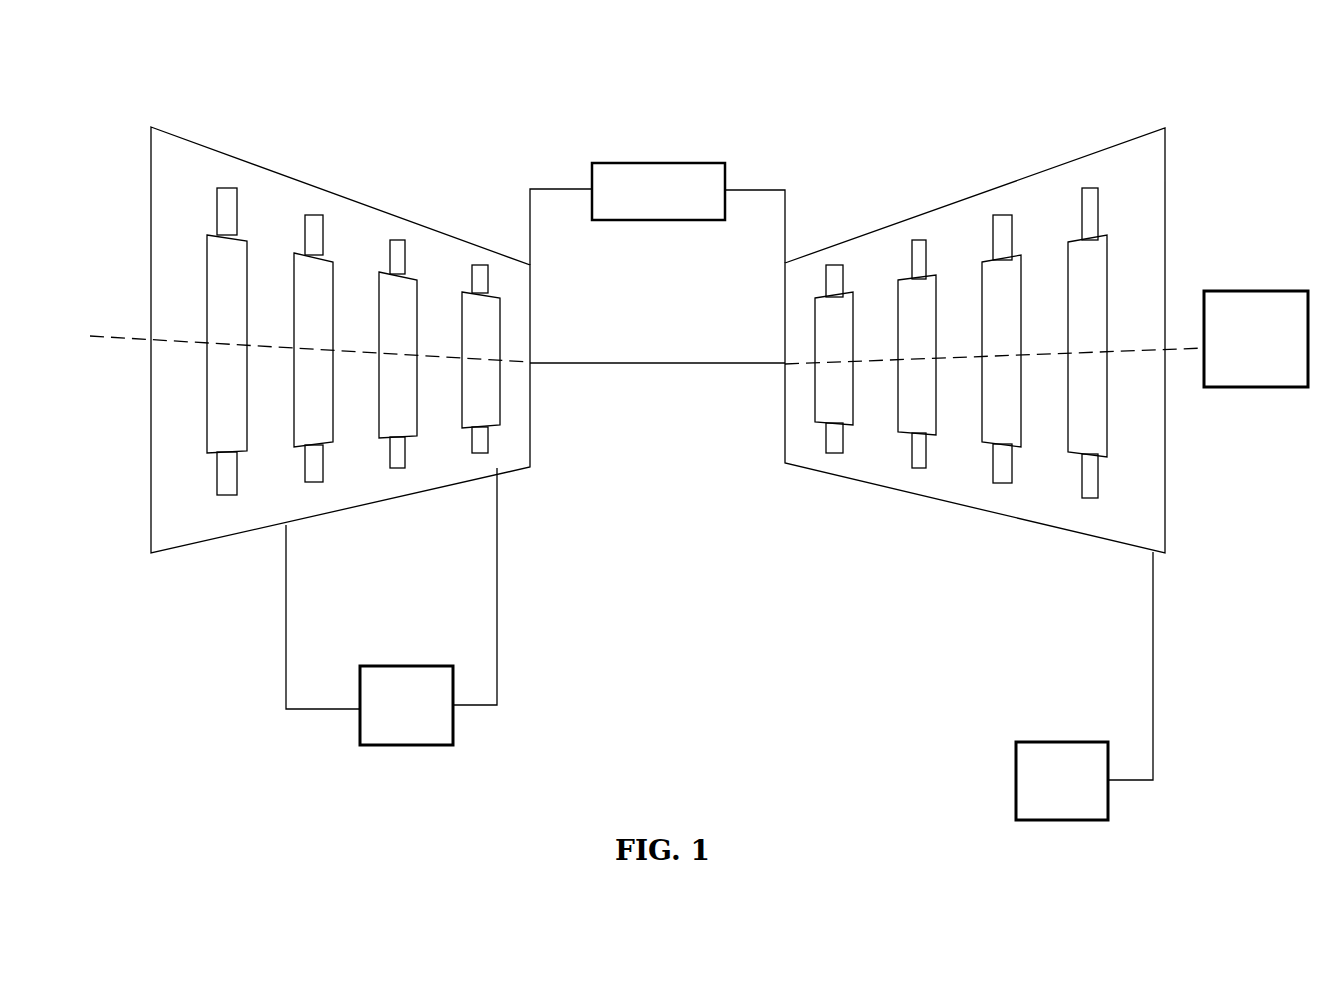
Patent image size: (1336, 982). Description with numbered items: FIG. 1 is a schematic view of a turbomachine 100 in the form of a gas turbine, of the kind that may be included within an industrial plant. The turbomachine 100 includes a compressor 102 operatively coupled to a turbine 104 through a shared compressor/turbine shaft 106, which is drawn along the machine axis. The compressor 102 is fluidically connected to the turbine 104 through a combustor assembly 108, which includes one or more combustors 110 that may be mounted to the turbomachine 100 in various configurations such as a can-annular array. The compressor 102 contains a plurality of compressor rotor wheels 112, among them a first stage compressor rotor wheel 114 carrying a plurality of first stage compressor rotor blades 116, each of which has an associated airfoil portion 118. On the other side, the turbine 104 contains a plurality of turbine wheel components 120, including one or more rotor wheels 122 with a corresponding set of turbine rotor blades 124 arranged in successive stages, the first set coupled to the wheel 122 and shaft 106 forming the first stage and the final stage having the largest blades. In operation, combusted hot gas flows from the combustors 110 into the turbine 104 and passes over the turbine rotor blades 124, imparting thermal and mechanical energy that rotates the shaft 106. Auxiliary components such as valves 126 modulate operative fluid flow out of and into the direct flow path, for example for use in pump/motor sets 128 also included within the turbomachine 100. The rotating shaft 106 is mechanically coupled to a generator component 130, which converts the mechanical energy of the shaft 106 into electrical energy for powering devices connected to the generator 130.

The turbomachine 100 is at (352, 90).
The compressor 102 is at (193, 550).
The turbine 104 is at (1070, 542).
The compressor/turbine shaft 106 is at (598, 365).
The combustor assembly 108 is at (593, 132).
The combustor 110 is at (653, 163).
The compressor rotor wheels 112 is at (280, 503).
The first stage compressor rotor wheel 114 is at (215, 437).
The first stage compressor rotor blades 116 is at (215, 498).
The airfoil portion 118 is at (227, 490).
The turbine wheel components 120 is at (1108, 482).
The rotor wheel 122 is at (848, 430).
The turbine rotor blades 124 is at (830, 265).
The valves 126 is at (391, 606).
The pump/motor sets 128 is at (1084, 686).
The generator component 130 is at (1256, 339).